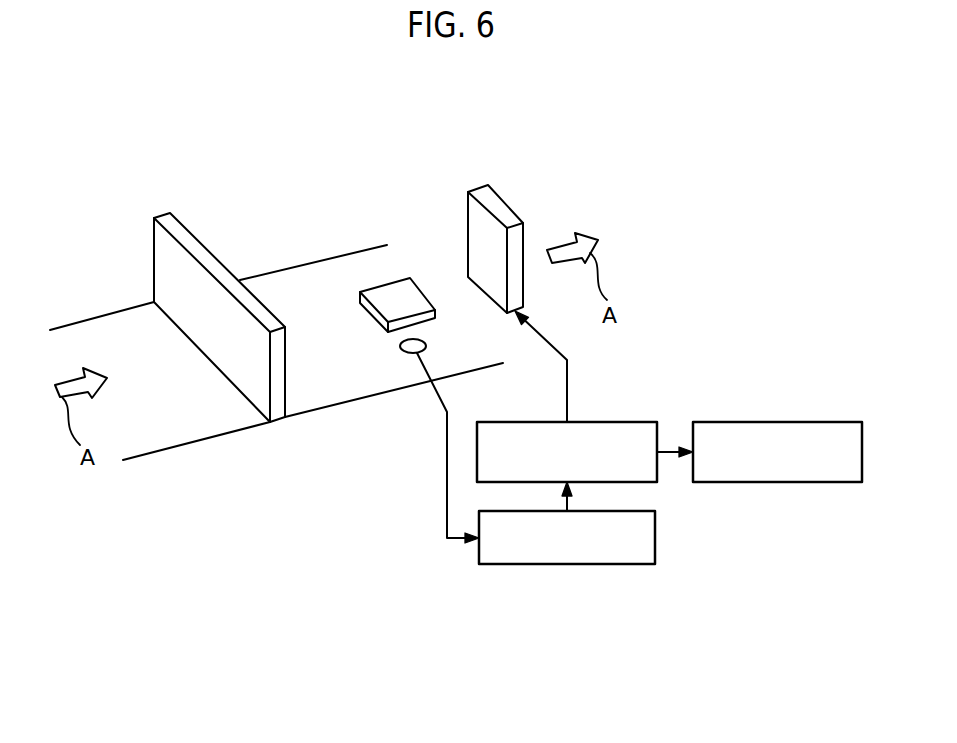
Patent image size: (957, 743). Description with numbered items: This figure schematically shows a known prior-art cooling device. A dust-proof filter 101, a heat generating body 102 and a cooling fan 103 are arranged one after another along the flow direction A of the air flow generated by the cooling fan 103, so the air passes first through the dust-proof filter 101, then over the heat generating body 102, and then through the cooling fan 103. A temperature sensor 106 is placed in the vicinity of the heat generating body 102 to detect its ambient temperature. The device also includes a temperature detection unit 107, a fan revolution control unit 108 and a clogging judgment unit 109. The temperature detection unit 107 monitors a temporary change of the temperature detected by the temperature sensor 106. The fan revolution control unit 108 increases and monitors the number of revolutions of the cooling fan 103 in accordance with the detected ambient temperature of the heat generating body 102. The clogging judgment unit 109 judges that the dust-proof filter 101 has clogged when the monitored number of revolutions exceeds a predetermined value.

The dust-proof filter 101 is at (173, 273).
The heat generating body 102 is at (373, 285).
The cooling fan 103 is at (477, 228).
The temperature sensor 106 is at (402, 352).
The temperature detection unit 107 is at (622, 564).
The fan revolution control unit 108 is at (613, 420).
The clogging judgment unit 109 is at (765, 420).